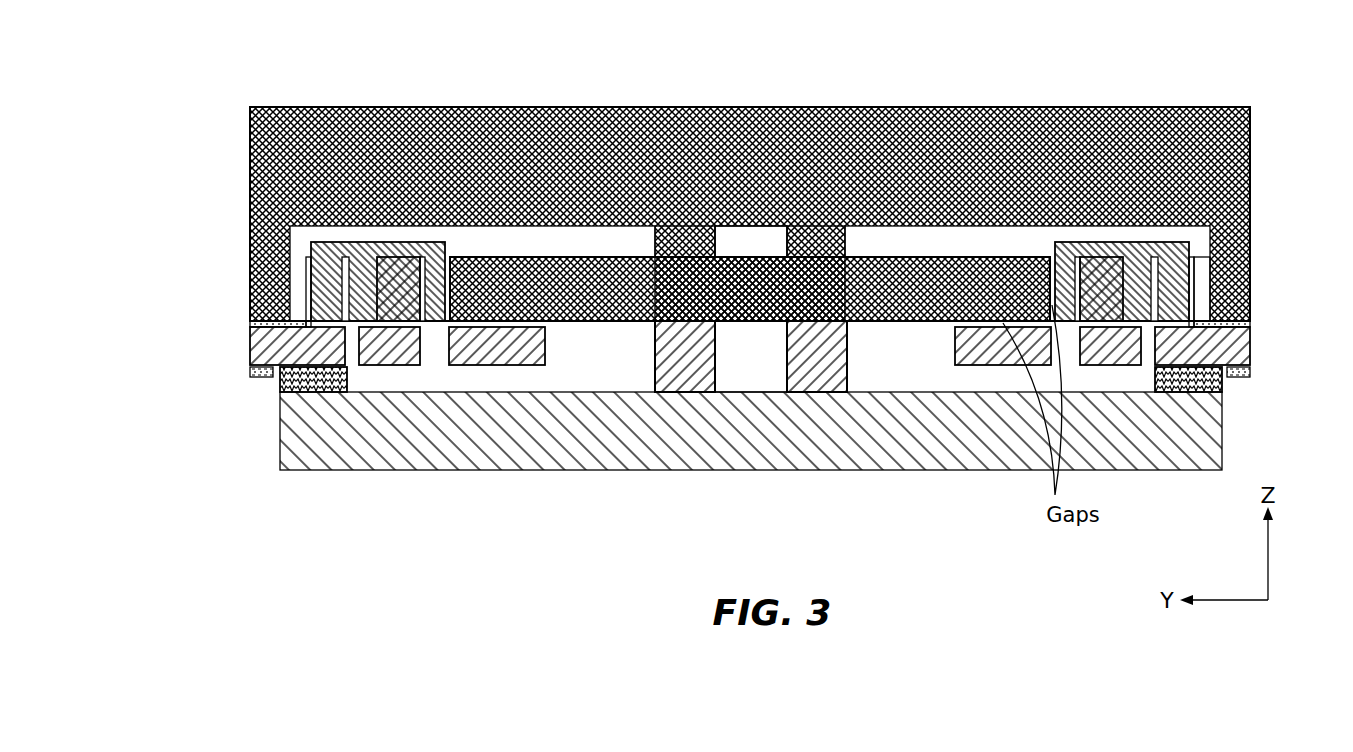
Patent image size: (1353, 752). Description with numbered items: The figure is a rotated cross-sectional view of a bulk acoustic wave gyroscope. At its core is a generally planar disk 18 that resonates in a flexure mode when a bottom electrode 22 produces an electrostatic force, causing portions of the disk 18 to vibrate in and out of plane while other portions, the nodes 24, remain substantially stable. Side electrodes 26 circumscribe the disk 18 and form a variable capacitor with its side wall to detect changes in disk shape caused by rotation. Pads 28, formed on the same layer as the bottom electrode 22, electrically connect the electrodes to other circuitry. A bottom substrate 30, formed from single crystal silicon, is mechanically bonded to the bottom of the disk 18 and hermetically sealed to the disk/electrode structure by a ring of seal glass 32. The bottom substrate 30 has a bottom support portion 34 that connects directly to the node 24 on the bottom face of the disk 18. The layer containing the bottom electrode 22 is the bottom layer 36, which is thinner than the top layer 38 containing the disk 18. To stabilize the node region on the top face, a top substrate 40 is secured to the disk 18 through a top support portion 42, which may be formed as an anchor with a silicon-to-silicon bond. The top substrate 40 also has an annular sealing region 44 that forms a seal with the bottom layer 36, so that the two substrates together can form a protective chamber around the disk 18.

The disk 18 is at (542, 282).
The bottom electrode 22 is at (750, 451).
The node 24 is at (786, 254).
The side electrode 26 is at (1117, 243).
The pad 28 is at (255, 378).
The bottom substrate 30 is at (342, 458).
The seal glass 32 is at (261, 322).
The bottom support portion 34 is at (676, 345).
The bottom layer 36 is at (500, 342).
The top layer 38 is at (1207, 274).
The top substrate 40 is at (1227, 172).
The top support portion 42 is at (813, 240).
The annular sealing region 44 is at (250, 281).